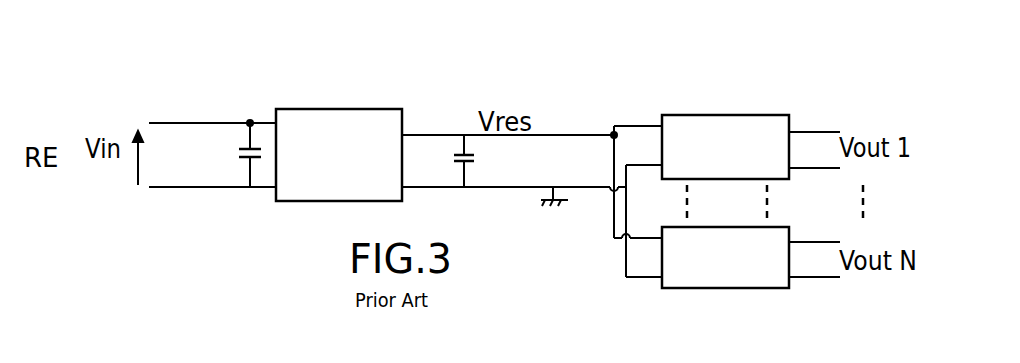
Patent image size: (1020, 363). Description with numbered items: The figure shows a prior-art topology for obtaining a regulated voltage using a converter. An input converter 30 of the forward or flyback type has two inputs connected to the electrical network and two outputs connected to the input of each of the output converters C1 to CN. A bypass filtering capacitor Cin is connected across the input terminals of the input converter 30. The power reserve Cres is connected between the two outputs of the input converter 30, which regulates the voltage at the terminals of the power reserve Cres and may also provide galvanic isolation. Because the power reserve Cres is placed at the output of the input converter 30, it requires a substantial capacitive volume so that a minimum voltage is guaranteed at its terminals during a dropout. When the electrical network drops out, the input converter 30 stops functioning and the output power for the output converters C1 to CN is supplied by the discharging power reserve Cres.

The input converter 30 is at (361, 118).
The bypass filtering capacitor Cin is at (218, 155).
The power reserve Cres is at (493, 161).
The output converter C1 is at (751, 147).
The output converter CN is at (751, 257).